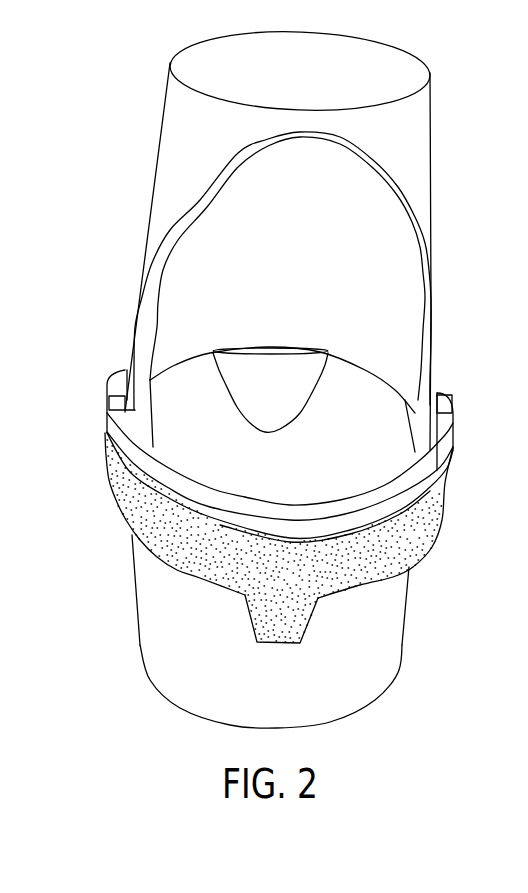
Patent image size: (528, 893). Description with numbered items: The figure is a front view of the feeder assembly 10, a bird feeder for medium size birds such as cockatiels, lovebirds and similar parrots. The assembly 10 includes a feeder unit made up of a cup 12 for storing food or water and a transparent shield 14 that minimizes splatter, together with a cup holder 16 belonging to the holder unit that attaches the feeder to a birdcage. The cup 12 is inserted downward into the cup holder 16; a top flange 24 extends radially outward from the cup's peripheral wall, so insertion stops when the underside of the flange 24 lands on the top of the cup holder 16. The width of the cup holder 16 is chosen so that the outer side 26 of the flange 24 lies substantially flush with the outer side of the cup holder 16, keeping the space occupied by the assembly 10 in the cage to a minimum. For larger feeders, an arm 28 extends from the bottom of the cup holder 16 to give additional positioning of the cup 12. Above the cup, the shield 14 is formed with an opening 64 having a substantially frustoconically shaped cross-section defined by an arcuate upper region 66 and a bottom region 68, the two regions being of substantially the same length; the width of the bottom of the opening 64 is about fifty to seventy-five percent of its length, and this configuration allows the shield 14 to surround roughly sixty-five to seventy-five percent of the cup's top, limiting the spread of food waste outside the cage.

The feeder assembly 10 is at (100, 562).
The cup 12 is at (183, 692).
The shield 14 is at (417, 157).
The cup holder 16 is at (370, 573).
The top flange 24 is at (415, 473).
The outer side 26 is at (157, 488).
The arm 28 is at (283, 632).
The opening 64 is at (362, 357).
The arcuate upper region 66 is at (305, 153).
The bottom region 68 is at (248, 400).